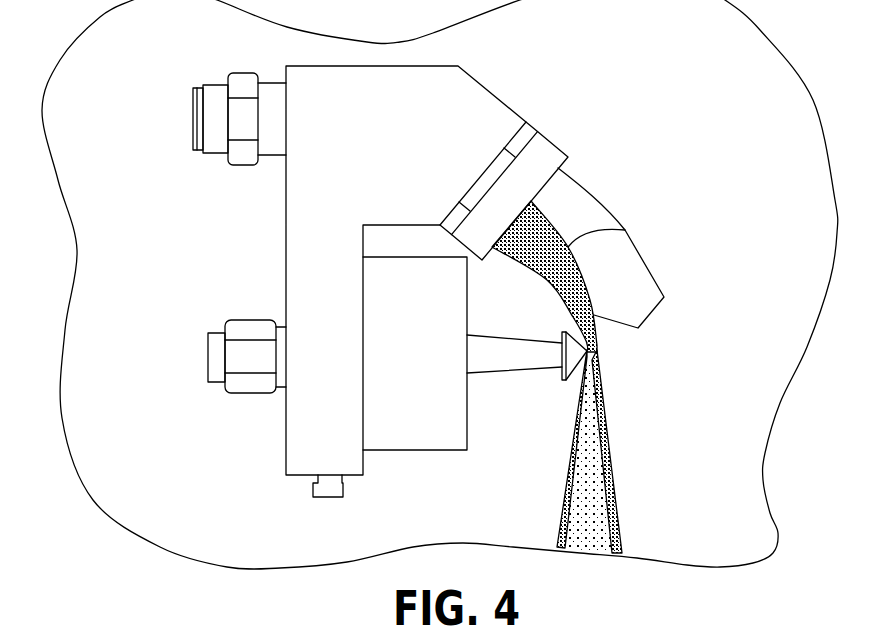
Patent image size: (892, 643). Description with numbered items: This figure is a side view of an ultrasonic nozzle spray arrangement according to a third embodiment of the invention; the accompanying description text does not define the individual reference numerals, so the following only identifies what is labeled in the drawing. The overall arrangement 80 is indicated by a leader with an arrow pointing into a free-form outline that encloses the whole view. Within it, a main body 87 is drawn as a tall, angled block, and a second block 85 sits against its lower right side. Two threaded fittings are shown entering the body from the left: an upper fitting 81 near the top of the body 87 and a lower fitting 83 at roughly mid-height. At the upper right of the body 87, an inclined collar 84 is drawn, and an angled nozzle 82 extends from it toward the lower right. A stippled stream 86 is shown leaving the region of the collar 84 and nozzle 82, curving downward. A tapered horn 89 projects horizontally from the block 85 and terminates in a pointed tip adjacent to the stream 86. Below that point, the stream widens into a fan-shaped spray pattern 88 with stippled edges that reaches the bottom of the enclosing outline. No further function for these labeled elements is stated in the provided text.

The nozzle assembly 80 is at (664, 124).
The fitting 81 is at (193, 123).
The nozzle 82 is at (652, 268).
The fitting 83 is at (208, 353).
The nozzle outlet 84 is at (627, 228).
The block 85 is at (395, 432).
The fluid stream 86 is at (597, 343).
The body 87 is at (295, 229).
The spray pattern 88 is at (590, 493).
The horn 89 is at (573, 368).